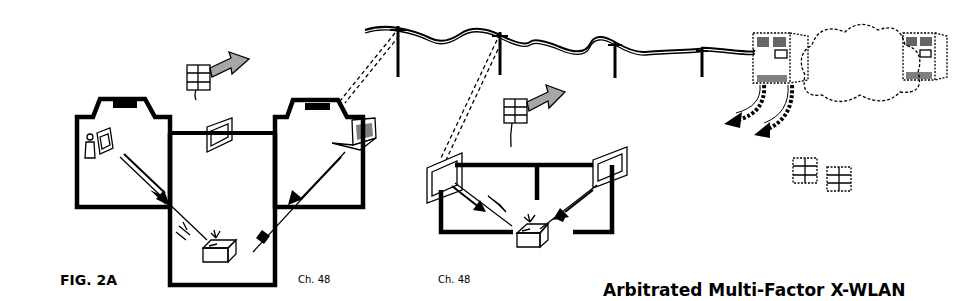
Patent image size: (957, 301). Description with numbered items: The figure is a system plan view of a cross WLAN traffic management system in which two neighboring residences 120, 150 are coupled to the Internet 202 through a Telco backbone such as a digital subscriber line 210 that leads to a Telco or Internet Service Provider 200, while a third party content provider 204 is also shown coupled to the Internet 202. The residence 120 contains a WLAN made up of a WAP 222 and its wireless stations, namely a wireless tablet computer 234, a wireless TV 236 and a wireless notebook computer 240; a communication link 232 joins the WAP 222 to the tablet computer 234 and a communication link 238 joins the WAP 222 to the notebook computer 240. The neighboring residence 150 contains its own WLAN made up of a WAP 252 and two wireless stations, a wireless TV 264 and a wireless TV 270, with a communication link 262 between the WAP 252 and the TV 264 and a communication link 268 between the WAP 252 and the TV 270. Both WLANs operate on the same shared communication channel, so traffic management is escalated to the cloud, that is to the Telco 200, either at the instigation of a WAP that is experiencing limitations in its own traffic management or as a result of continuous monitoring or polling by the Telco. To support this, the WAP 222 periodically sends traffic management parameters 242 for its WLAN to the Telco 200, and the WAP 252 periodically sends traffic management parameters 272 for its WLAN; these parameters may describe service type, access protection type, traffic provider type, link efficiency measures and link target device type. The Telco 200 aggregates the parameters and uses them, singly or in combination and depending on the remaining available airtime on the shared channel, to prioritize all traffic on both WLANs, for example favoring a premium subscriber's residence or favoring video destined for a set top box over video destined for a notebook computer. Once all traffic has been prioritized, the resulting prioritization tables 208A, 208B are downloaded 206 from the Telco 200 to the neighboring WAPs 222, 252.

The residence 120 is at (95, 212).
The residence 150 is at (614, 222).
The Telco or Internet Service Provider 200 is at (805, 68).
The Internet 202 is at (866, 100).
The third party content provider 204 is at (942, 80).
The download of prioritization tables 206 is at (800, 120).
The prioritization table 208A is at (808, 151).
The prioritization table 208B is at (838, 167).
The digital subscriber line 210 is at (640, 48).
The WAP 222 is at (231, 257).
The communication link 232 is at (131, 165).
The wireless tablet computer 234 is at (118, 132).
The wireless TV 236 is at (226, 122).
The communication link 238 is at (318, 174).
The wireless notebook computer 240 is at (340, 141).
The traffic management parameters 242 is at (186, 74).
The WAP 252 is at (549, 236).
The communication link 262 is at (483, 194).
The wireless TV 264 is at (457, 178).
The communication link 268 is at (592, 194).
The wireless TV 270 is at (627, 170).
The traffic management parameters 272 is at (506, 122).